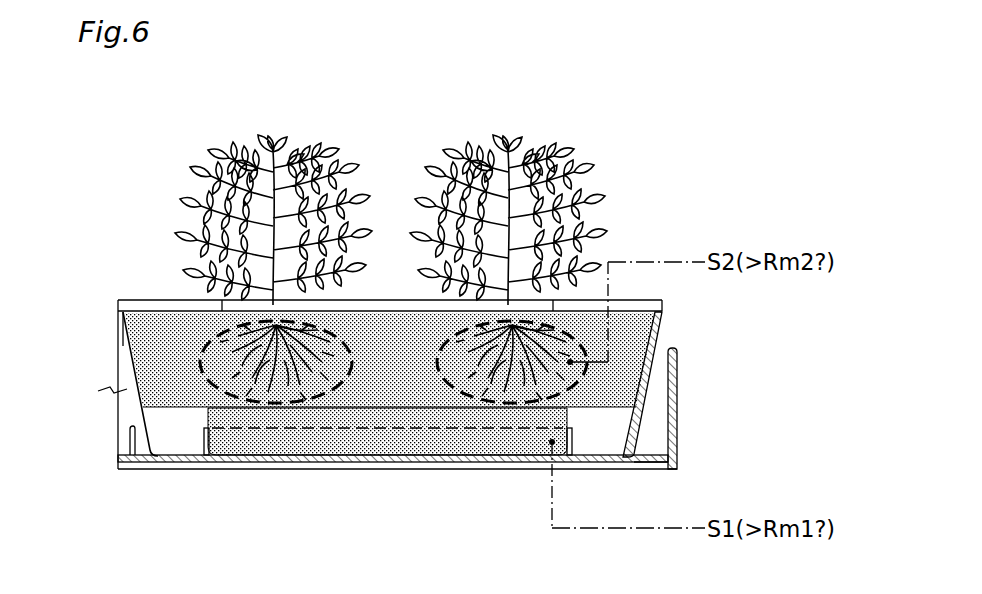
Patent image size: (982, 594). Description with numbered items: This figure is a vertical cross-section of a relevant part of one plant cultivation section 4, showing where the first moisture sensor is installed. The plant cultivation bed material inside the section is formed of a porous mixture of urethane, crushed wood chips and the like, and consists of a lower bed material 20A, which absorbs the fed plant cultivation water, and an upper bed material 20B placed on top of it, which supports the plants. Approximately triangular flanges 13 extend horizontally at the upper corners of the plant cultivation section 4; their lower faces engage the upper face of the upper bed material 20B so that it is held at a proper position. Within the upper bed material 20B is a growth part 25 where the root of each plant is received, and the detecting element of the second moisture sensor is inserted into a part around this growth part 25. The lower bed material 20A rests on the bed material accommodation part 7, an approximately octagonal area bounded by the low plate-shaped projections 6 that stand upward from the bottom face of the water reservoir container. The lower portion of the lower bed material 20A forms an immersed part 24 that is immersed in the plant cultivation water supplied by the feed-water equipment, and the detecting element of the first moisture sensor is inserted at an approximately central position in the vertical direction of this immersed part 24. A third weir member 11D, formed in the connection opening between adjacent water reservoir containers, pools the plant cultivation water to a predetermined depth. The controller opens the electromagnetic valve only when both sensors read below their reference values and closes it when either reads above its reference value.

The plant cultivation section 4 is at (105, 292).
The flange 13 is at (143, 300).
The growth part 25 is at (210, 343).
The upper bed material 20B is at (388, 330).
The lower bed material 20A is at (205, 422).
The immersed part 24 is at (327, 443).
The plate-shaped projection 6 is at (202, 440).
The bed material accommodation part 7 is at (380, 455).
The third weir member 11D is at (127, 437).